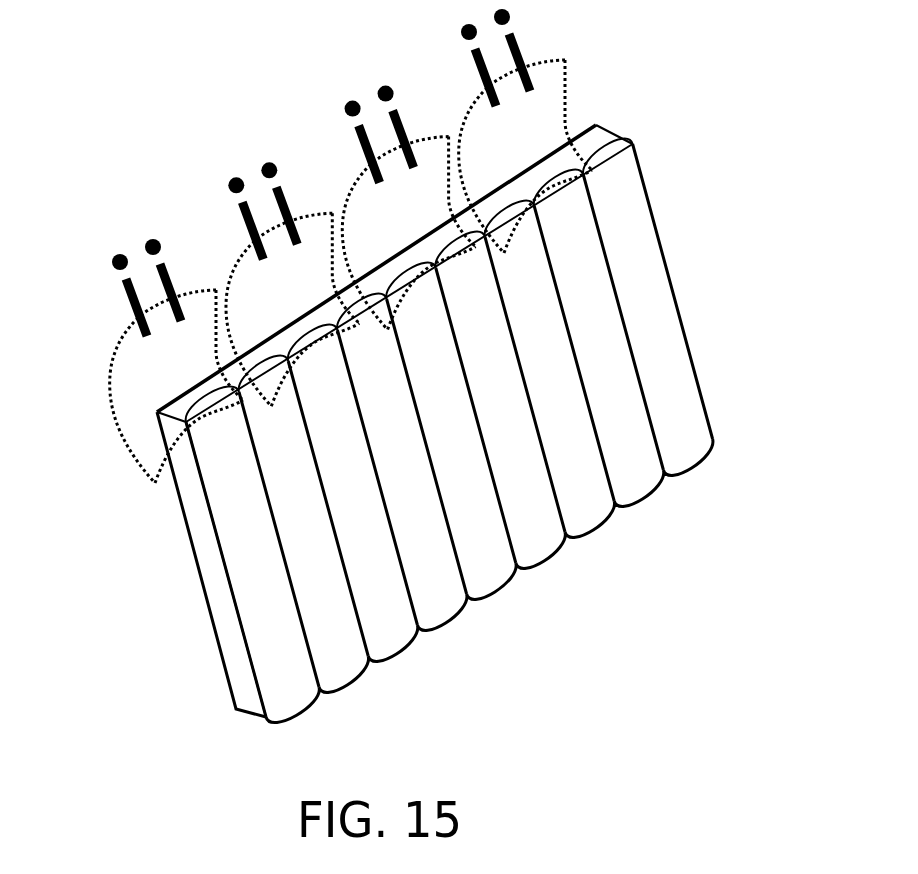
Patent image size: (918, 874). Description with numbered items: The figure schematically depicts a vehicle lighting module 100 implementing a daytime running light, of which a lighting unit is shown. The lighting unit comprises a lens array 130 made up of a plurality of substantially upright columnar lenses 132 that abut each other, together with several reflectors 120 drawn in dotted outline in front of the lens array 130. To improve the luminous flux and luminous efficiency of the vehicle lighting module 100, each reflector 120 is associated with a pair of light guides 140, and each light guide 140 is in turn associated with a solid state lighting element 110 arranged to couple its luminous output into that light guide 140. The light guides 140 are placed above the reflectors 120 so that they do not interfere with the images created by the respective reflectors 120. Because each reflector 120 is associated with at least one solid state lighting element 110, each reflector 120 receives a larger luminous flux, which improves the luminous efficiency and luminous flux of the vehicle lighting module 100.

The vehicle lighting module 100 is at (104, 121).
The solid state lighting element 110 is at (116, 260).
The reflector 120 is at (125, 392).
The lens array 130 is at (215, 592).
The columnar lens 132 is at (616, 155).
The light guide 140 is at (127, 298).